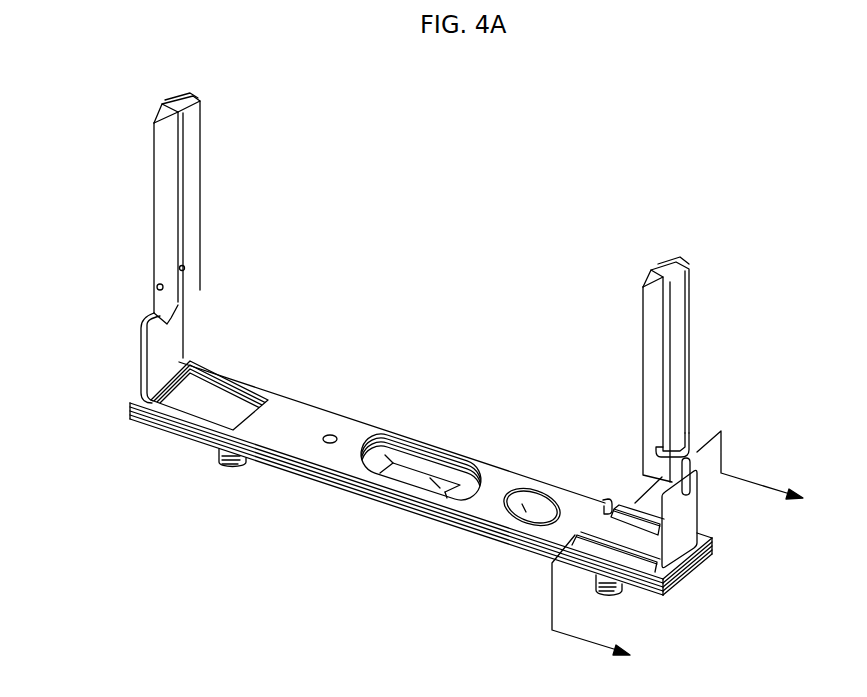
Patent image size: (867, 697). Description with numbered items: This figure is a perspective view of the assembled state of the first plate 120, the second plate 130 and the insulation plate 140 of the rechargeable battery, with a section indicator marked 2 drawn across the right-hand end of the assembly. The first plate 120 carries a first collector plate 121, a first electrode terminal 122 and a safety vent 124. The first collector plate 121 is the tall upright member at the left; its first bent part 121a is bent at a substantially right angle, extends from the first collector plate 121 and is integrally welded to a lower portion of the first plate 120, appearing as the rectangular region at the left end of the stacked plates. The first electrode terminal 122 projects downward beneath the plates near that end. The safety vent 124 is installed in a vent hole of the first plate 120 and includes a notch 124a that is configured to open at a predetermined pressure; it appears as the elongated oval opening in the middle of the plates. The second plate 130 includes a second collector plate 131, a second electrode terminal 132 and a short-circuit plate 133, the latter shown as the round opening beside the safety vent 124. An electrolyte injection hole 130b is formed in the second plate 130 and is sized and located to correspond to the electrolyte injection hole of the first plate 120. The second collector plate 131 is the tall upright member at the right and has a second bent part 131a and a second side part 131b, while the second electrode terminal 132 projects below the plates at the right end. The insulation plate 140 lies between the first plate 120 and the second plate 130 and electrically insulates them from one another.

The first plate 120 is at (421, 443).
The first collector plate 121 is at (158, 353).
The first bent part 121a is at (212, 397).
The first electrode terminal 122 is at (218, 458).
The safety vent 124 is at (423, 460).
The notch 124a is at (447, 480).
The second plate 130 is at (293, 402).
The electrolyte injection hole 130b is at (332, 434).
The second collector plate 131 is at (712, 540).
The second bent part 131a is at (604, 504).
The second side part 131b is at (611, 516).
The second electrode terminal 132 is at (608, 597).
The short-circuit plate 133 is at (504, 511).
The insulation plate 140 is at (322, 488).
The section line of FIG. 2 is at (687, 549).